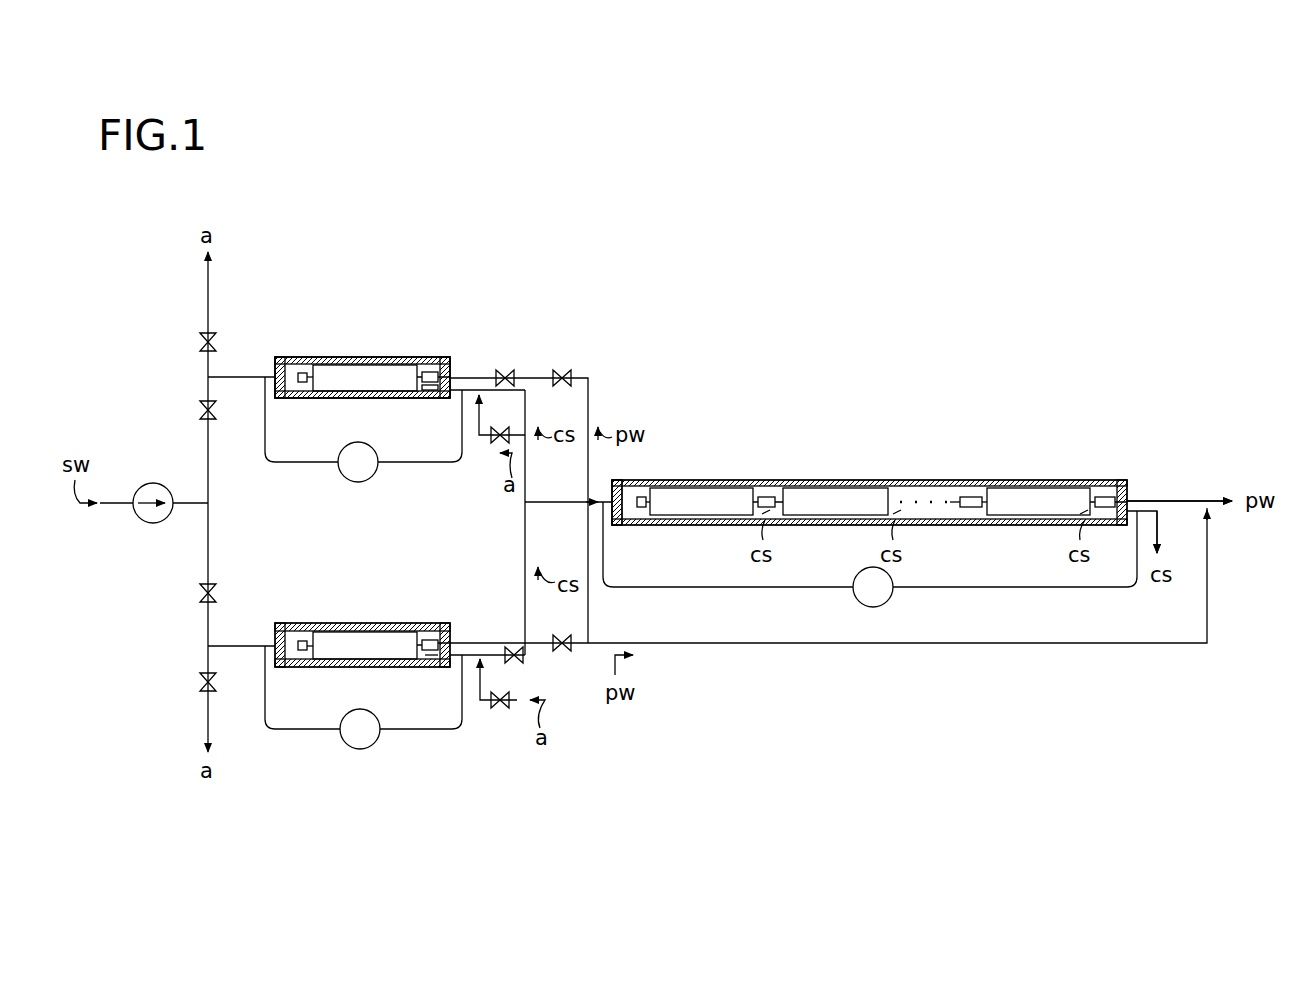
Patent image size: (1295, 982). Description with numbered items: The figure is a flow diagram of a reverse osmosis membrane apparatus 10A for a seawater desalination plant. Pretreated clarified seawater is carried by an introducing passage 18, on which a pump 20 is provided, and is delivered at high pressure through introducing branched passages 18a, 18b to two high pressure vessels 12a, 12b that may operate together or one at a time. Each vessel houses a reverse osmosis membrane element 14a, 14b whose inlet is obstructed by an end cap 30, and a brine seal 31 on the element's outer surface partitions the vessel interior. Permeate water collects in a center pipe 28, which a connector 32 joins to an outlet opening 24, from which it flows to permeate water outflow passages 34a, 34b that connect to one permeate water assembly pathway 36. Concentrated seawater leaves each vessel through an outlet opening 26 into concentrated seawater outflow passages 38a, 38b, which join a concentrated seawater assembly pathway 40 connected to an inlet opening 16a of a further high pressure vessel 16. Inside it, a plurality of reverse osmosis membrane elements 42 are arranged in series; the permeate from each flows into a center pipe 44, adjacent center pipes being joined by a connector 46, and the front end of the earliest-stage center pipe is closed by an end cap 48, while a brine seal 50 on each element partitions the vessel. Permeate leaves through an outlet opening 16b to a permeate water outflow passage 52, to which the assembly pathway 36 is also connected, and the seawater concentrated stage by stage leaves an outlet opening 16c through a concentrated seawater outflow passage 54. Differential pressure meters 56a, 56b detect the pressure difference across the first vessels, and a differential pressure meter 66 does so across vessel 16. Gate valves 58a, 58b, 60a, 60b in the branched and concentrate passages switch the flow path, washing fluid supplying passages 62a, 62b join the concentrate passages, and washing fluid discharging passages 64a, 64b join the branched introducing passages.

The reverse osmosis membrane apparatus 10A is at (691, 375).
The high pressure vessel 12a is at (362, 334).
The high pressure vessel 12b is at (362, 619).
The reverse osmosis membrane element 14a is at (337, 364).
The reverse osmosis membrane element 14b is at (337, 631).
The high pressure vessel 16 is at (869, 495).
The inlet opening 16a is at (627, 497).
The outlet opening 16b is at (1130, 500).
The outlet opening 16c is at (1120, 523).
The introducing passage 18 is at (193, 503).
The introducing branched passage 18a is at (238, 377).
The introducing branched passage 18b is at (238, 646).
The pump 20 is at (140, 490).
The outlet opening 24 is at (463, 380).
The outlet opening 26 is at (443, 697).
The center pipe 28 is at (432, 372).
The end cap 30 is at (302, 372).
The brine seal 31 is at (407, 357).
The connector 32 is at (452, 375).
The permeate water outflow passage 34a is at (505, 372).
The permeate water outflow passage 34b is at (490, 648).
The permeate water assembly pathway 36 is at (683, 645).
The concentrated seawater outflow passage 38a is at (528, 462).
The concentrated seawater outflow passage 38b is at (528, 608).
The concentrated seawater assembly pathway 40 is at (558, 505).
The reverse osmosis membrane element 42 is at (710, 488).
The center pipe 44 is at (962, 497).
The connector 46 is at (975, 497).
The end cap 48 is at (640, 517).
The brine seal 50 is at (882, 490).
The permeate water outflow passage 52 is at (1172, 500).
The concentrated seawater outflow passage 54 is at (1163, 538).
The differential pressure meter 56a is at (366, 483).
The differential pressure meter 56b is at (366, 750).
The gate valve 58a is at (199, 410).
The gate valve 58b is at (199, 593).
The gate valve 60a is at (562, 372).
The gate valve 60b is at (562, 652).
The washing fluid supplying passage 62a is at (478, 440).
The washing fluid supplying passage 62b is at (479, 706).
The washing fluid discharging passage 64a is at (205, 297).
The washing fluid discharging passage 64b is at (205, 712).
The differential pressure meter 66 is at (888, 600).